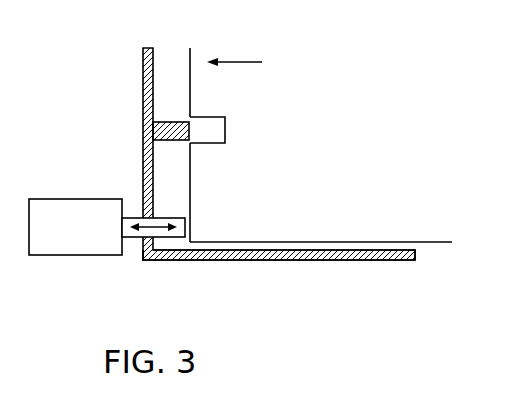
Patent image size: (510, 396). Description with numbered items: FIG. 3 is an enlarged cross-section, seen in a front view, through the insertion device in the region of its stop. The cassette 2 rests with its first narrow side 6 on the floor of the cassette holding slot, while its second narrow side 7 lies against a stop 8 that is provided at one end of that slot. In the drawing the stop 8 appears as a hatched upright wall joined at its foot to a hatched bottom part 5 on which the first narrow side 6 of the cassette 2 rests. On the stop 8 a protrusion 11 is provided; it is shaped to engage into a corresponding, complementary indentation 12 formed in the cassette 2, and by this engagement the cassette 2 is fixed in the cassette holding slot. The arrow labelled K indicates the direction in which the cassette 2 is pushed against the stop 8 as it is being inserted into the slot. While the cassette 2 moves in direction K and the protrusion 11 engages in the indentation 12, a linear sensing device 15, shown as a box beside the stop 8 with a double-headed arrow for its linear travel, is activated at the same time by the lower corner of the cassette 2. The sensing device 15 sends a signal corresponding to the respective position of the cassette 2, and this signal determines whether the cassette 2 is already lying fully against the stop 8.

The cassette 2 is at (393, 207).
The bottom wall section 5 is at (268, 262).
The first narrow side 6 is at (275, 241).
The second narrow side 7 is at (194, 51).
The stop 8 is at (143, 78).
The protrusion 11 is at (165, 122).
The indentation 12 is at (222, 133).
The linear sensing device 15 is at (91, 244).
The direction K is at (248, 62).